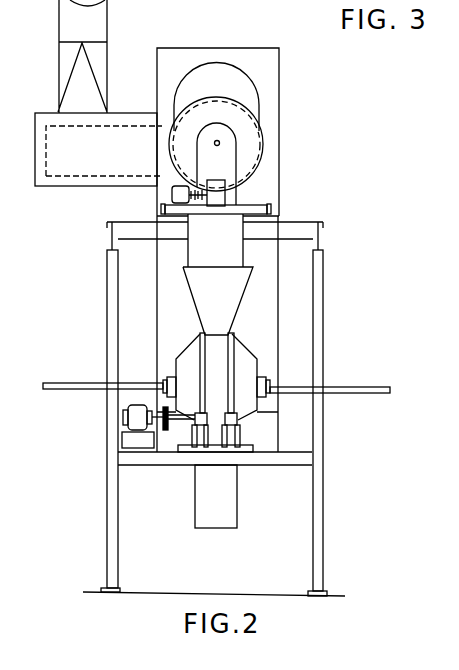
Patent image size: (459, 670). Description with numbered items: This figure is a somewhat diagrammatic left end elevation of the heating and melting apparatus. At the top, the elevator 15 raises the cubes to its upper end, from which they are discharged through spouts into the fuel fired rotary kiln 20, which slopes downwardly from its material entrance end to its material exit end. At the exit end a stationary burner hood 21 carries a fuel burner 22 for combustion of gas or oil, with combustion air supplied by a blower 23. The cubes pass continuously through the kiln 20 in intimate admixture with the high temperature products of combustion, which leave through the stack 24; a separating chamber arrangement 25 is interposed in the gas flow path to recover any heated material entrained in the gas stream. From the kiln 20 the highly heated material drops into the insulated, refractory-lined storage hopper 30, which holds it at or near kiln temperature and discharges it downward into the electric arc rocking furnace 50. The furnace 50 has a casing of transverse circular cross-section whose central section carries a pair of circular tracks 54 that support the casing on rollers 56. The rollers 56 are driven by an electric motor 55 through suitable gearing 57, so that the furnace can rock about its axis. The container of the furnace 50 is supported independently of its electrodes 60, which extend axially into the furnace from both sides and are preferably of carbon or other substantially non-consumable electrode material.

The elevator 15 is at (268, 72).
The rotary kiln 20 is at (252, 102).
The burner hood 21 is at (257, 171).
The fuel burner 22 is at (222, 143).
The blower 23 is at (222, 195).
The stack 24 is at (97, 23).
The separating chamber arrangement 25 is at (89, 163).
The storage hopper 30 is at (200, 290).
The electric arc rocking furnace 50 is at (243, 363).
The circular tracks 54 is at (202, 380).
The electric motor 55 is at (137, 417).
The rollers 56 is at (237, 420).
The gearing 57 is at (165, 407).
The electrodes 60 is at (43, 383).